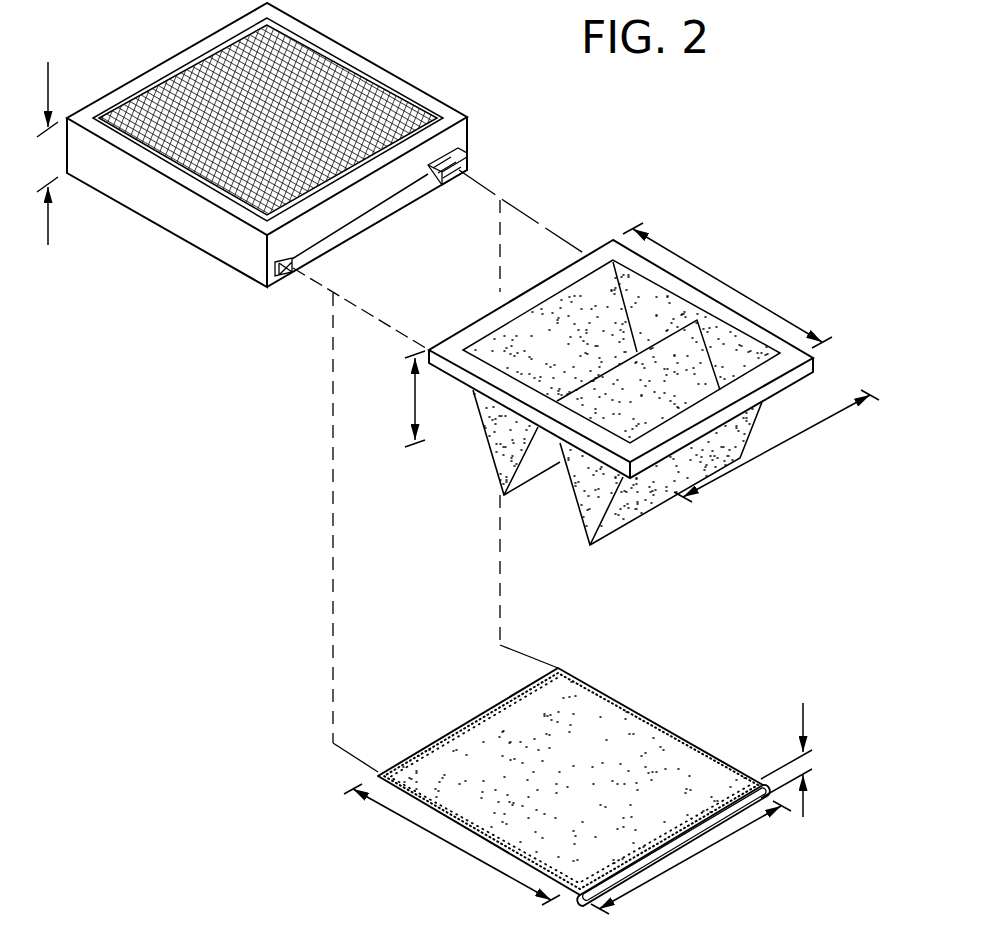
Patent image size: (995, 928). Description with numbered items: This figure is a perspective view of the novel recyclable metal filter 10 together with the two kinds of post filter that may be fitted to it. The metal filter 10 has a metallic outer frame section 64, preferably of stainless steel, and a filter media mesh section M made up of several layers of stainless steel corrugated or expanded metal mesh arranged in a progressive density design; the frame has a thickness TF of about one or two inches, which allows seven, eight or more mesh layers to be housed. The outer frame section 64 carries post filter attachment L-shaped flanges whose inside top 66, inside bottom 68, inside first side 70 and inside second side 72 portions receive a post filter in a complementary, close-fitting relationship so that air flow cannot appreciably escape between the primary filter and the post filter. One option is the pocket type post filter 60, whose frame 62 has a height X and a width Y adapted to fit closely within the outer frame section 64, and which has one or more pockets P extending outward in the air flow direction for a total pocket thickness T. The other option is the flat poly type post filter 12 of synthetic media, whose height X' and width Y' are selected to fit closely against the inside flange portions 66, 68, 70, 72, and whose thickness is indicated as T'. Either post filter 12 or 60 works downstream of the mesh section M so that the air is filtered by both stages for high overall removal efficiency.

The recyclable metal filter 10 is at (299, 145).
The filter media mesh section M is at (198, 83).
The frame thickness TF is at (48, 153).
The inside second side portion 72 is at (77, 146).
The outer frame section 64 is at (375, 190).
The inside first side portion 70 is at (413, 177).
The inside top portion 66 is at (466, 158).
The inside bottom portion 68 is at (294, 267).
The pocket type post filter 60 is at (621, 362).
The frame of the pocket filter 62 is at (660, 273).
The pockets P is at (522, 488).
The width of the frame of the pocket filter Y is at (727, 285).
The height of the frame of the pocket filter X is at (776, 446).
The total pocket thickness T is at (415, 399).
The flat type post filter 12 is at (645, 736).
The width of the flat poly filter Y' is at (452, 844).
The height of the flat poly filter X' is at (691, 857).
The thickness of the flat poly filter T' is at (795, 758).